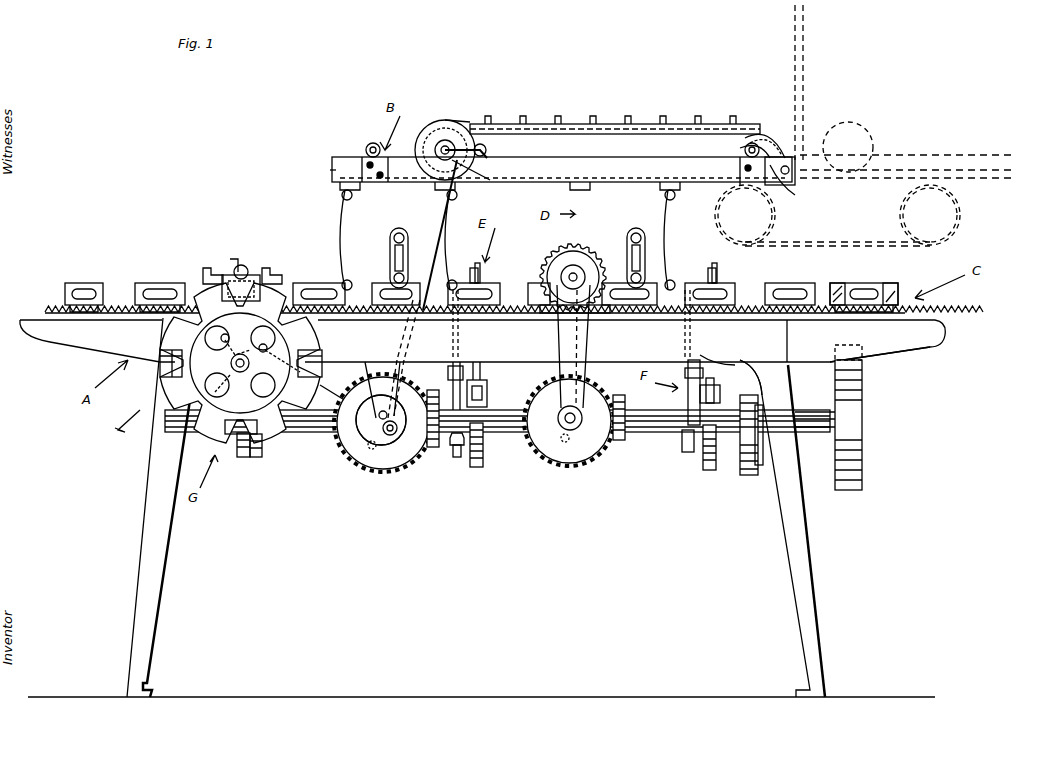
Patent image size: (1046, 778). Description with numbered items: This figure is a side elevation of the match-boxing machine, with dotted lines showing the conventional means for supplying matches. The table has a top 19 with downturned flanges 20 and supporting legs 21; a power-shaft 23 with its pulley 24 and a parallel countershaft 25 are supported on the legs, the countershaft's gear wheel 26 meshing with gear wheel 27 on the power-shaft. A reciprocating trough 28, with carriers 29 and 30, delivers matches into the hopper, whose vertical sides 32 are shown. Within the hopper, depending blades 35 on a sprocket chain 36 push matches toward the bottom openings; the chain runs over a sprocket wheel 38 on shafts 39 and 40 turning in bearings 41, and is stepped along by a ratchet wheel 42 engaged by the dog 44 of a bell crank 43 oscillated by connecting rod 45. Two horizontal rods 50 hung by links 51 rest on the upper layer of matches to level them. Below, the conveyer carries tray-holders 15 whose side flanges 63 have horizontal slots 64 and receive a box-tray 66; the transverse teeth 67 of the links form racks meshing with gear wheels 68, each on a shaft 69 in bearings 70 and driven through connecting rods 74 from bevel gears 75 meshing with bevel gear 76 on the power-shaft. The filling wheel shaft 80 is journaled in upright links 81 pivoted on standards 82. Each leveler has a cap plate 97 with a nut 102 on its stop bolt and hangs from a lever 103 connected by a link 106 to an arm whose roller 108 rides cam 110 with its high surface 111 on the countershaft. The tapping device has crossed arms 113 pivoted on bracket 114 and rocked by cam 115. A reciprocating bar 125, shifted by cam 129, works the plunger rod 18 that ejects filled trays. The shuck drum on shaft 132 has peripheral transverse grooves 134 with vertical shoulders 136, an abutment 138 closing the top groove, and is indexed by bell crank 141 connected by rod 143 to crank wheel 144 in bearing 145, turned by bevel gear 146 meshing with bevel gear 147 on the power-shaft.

The tray-holder 15 is at (820, 285).
The plunger rod 18 is at (263, 272).
The table top 19 is at (935, 323).
The downturned flanges 20 is at (920, 350).
The supporting legs 21 is at (165, 533).
The power-shaft 23 is at (812, 420).
The pulley 24 is at (855, 450).
The countershaft 25 is at (665, 440).
The gear wheel 26 is at (745, 478).
The gear wheel 27 is at (760, 440).
The trough 28 is at (890, 158).
The carrier 29 is at (805, 105).
The carrier 30 is at (795, 242).
The vertical sides 32 is at (345, 160).
The depending blades 35 is at (650, 118).
The sprocket chain 36 is at (695, 125).
The sprocket wheel 38 is at (735, 150).
The shaft 39 is at (465, 135).
The shaft 40 is at (755, 138).
The bearings 41 is at (786, 178).
The ratchet wheel 42 is at (428, 125).
The bell crank 43 is at (447, 175).
The dog 44 is at (510, 160).
The connecting rod 45 is at (460, 198).
The horizontal rods 50 is at (320, 178).
The links 51 is at (548, 182).
The side flanges 63 is at (98, 290).
The horizontal slots 64 is at (92, 290).
The box-tray 66 is at (890, 286).
The transverse teeth 67 is at (735, 305).
The gear wheels 68 is at (550, 275).
The shaft 69 is at (563, 322).
The bearings 70 is at (582, 262).
The connecting rods 74 is at (605, 348).
The bevel gears 75 is at (585, 460).
The bevel gear 76 is at (625, 445).
The shaft 80 is at (645, 235).
The upright links 81 is at (388, 245).
The standards 82 is at (385, 268).
The cap plate 97 is at (508, 282).
The nut 102 is at (690, 288).
The lever 103 is at (478, 270).
The link 106 is at (745, 368).
The roller 108 is at (720, 390).
The cam 110 is at (695, 455).
The high surface 111 is at (718, 455).
The crossed arms 113 is at (490, 382).
The bracket 114 is at (466, 360).
The cam 115 is at (450, 460).
The reciprocating bar 125 is at (243, 457).
The cam 129 is at (262, 450).
The shaft 132 is at (195, 412).
The peripheral transverse grooves 134 is at (165, 380).
The vertical shoulders 136 is at (166, 350).
The abutment 138 is at (235, 258).
The bell crank 141 is at (250, 342).
The rod 143 is at (380, 365).
The crank wheel 144 is at (350, 425).
The bearing 145 is at (405, 360).
The bevel gear 146 is at (345, 470).
The bevel gear 147 is at (420, 440).